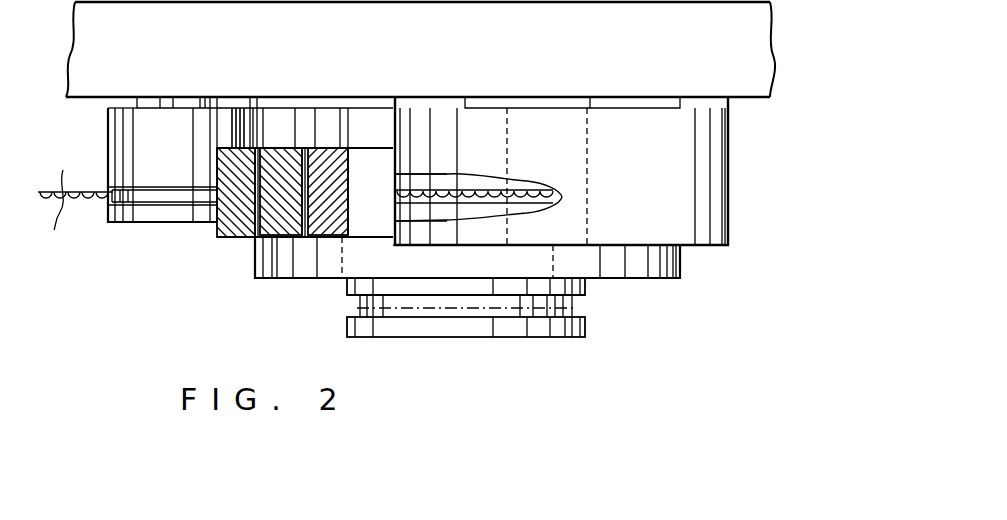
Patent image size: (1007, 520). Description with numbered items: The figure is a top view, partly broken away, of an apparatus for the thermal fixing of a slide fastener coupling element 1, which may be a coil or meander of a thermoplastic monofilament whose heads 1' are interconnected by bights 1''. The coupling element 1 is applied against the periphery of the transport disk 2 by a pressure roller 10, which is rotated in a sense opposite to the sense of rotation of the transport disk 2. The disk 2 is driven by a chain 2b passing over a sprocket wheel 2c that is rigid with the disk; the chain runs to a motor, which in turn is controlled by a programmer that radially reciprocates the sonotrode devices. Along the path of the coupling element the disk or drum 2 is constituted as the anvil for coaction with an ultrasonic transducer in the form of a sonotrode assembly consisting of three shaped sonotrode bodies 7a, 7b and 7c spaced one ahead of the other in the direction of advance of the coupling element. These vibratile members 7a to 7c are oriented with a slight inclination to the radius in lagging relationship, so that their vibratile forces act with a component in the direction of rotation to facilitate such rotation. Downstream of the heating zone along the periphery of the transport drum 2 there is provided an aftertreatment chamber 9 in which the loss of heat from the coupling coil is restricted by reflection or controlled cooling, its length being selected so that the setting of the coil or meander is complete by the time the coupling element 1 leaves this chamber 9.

The coupling element 1 is at (326, 230).
The heads 1' is at (75, 191).
The bights 1'' is at (64, 216).
The transport disk 2 is at (300, 272).
The chain 2b is at (427, 322).
The sprocket wheel 2c is at (503, 328).
The sonotrode body 7a is at (230, 218).
The sonotrode body 7b is at (277, 157).
The sonotrode body 7c is at (328, 157).
The aftertreatment chamber 9 is at (703, 198).
The pressure roller 10 is at (158, 127).